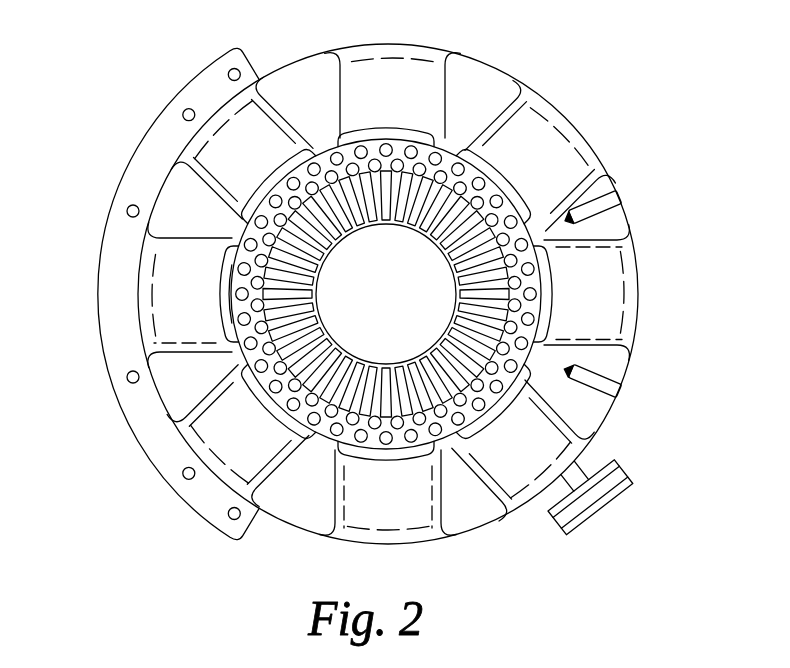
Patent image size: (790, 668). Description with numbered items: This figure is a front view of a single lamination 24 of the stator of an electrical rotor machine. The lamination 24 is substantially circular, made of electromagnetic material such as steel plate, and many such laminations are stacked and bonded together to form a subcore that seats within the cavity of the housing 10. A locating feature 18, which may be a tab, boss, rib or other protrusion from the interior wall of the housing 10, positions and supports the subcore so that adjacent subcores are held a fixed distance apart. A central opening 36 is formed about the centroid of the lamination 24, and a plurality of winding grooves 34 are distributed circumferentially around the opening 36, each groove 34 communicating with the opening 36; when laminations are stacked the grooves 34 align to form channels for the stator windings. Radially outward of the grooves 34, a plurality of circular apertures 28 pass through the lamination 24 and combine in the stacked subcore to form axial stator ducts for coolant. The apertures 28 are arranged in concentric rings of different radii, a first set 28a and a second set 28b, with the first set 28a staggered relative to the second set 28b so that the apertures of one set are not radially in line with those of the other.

The housing 10 is at (163, 112).
The locating feature 18 is at (197, 238).
The lamination 24 is at (550, 307).
The apertures 28 is at (490, 178).
The first set 28a is at (234, 271).
The second set 28b is at (245, 303).
The winding grooves 34 is at (562, 341).
The central opening 36 is at (399, 284).